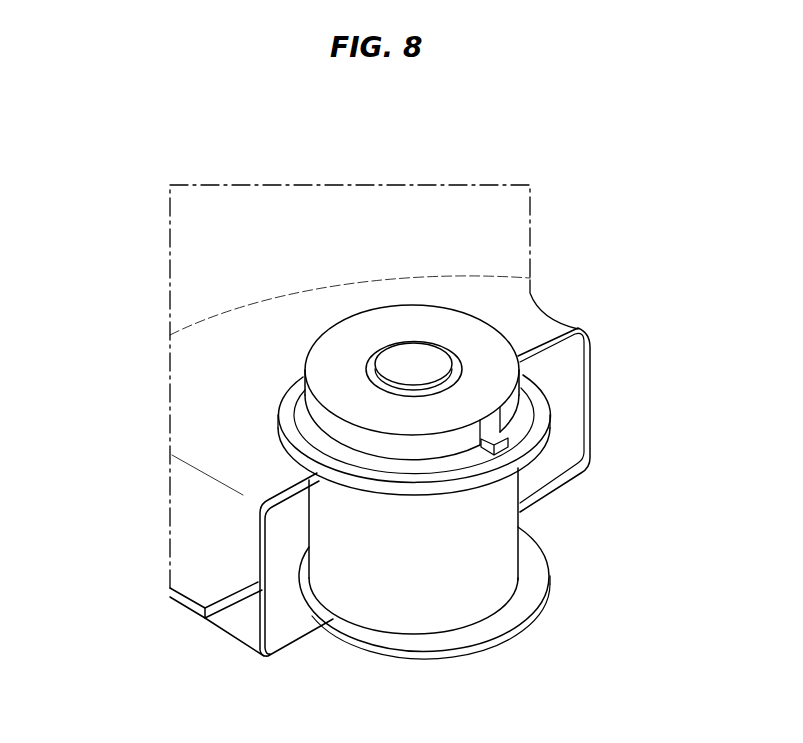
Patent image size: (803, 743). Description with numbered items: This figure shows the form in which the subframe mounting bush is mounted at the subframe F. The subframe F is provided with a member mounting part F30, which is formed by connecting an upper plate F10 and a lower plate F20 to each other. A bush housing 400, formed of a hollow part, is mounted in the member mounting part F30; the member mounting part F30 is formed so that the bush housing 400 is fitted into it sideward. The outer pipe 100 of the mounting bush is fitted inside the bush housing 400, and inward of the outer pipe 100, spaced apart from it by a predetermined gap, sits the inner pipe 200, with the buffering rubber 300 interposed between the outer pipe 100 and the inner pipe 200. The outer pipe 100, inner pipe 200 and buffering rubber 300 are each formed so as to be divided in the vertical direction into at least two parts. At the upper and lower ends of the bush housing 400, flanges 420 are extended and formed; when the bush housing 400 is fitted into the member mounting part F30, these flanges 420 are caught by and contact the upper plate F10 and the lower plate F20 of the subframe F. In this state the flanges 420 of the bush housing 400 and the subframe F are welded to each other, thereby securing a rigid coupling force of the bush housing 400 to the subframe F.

The subframe F is at (161, 293).
The upper plate F10 is at (202, 453).
The lower plate F20 is at (246, 631).
The member mounting part F30 is at (291, 493).
The outer pipe 100 is at (533, 413).
The inner pipe 200 is at (428, 363).
The buffering rubber 300 is at (517, 403).
The bush housing 400 is at (505, 527).
The flanges 420 is at (550, 437).